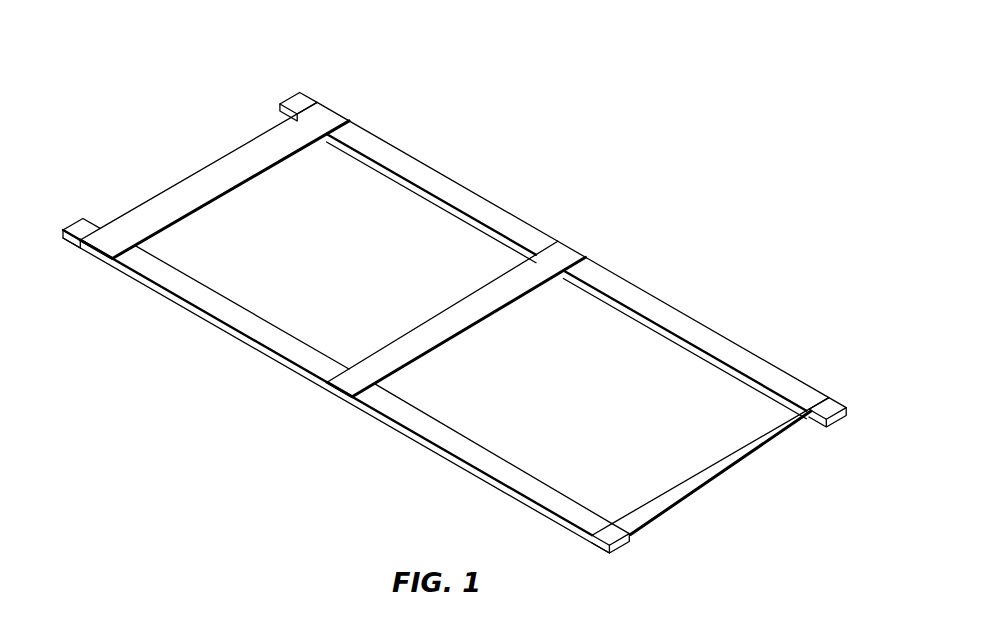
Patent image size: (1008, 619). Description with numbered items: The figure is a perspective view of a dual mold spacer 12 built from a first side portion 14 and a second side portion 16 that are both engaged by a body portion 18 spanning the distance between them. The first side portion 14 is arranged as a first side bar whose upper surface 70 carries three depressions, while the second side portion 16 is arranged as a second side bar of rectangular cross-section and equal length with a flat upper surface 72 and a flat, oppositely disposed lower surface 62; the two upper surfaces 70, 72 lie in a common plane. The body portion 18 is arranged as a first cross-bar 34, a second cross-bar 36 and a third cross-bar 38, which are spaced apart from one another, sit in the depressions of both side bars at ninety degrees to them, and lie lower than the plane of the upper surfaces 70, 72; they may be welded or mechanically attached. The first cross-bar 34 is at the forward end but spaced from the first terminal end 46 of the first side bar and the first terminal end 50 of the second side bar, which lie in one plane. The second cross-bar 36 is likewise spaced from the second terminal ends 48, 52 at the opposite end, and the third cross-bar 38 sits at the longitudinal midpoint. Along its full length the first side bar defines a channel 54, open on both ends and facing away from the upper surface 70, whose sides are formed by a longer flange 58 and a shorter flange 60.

The dual mold spacer 12 is at (700, 160).
The first side portion 14 is at (462, 456).
The second side portion 16 is at (718, 334).
The body portion 18 is at (500, 305).
The first cross-bar 34 is at (733, 442).
The second cross-bar 36 is at (191, 186).
The third cross-bar 38 is at (412, 347).
The first terminal end 46 is at (640, 547).
The second terminal end 48 is at (74, 218).
The first terminal end 50 is at (850, 412).
The second terminal end 52 is at (292, 98).
The channel 54 is at (630, 559).
The flange 58 is at (605, 549).
The flange 60 is at (636, 530).
The lower surface 62 is at (828, 427).
The upper surface 70 is at (222, 309).
The upper surface 72 is at (464, 191).